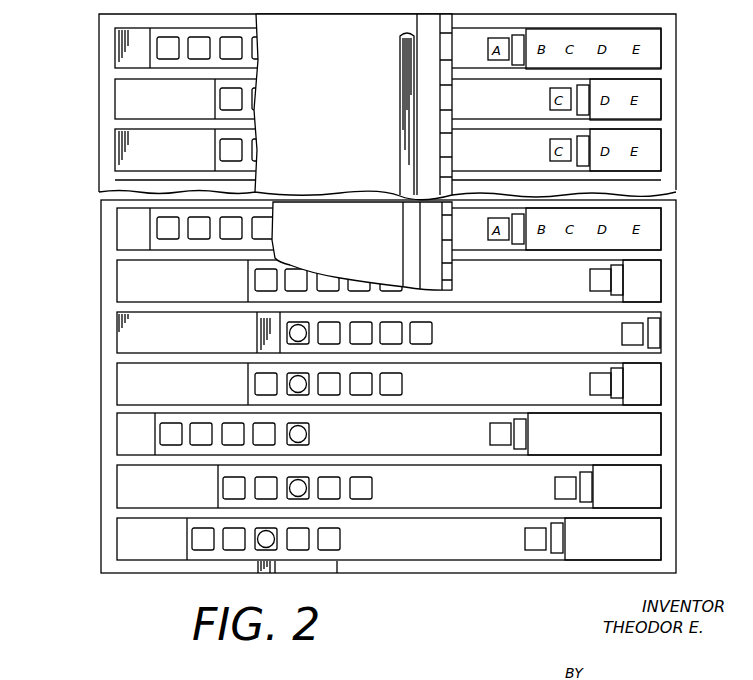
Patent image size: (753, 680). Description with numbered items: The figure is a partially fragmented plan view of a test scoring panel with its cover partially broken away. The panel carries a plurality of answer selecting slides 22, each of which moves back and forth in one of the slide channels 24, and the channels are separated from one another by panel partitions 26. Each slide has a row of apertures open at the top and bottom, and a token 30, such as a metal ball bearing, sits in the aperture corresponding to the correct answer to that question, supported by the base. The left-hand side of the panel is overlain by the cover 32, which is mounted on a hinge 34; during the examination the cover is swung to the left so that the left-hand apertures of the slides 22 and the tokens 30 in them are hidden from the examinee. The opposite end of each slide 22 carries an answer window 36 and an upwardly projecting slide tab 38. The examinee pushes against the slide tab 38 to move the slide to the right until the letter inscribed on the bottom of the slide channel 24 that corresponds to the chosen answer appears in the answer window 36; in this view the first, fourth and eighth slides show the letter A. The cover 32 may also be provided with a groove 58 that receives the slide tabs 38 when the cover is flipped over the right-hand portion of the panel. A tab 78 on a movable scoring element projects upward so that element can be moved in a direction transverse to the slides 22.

The answer selecting slide 22 is at (218, 481).
The slide channel 24 is at (120, 420).
The panel partition 26 is at (117, 257).
The token 30 is at (305, 389).
The cover 32 is at (401, 20).
The hinge 34 is at (452, 92).
The answer window 36 is at (603, 291).
The slide tab 38 is at (615, 290).
The groove 58 is at (400, 143).
The tab 78 is at (313, 574).